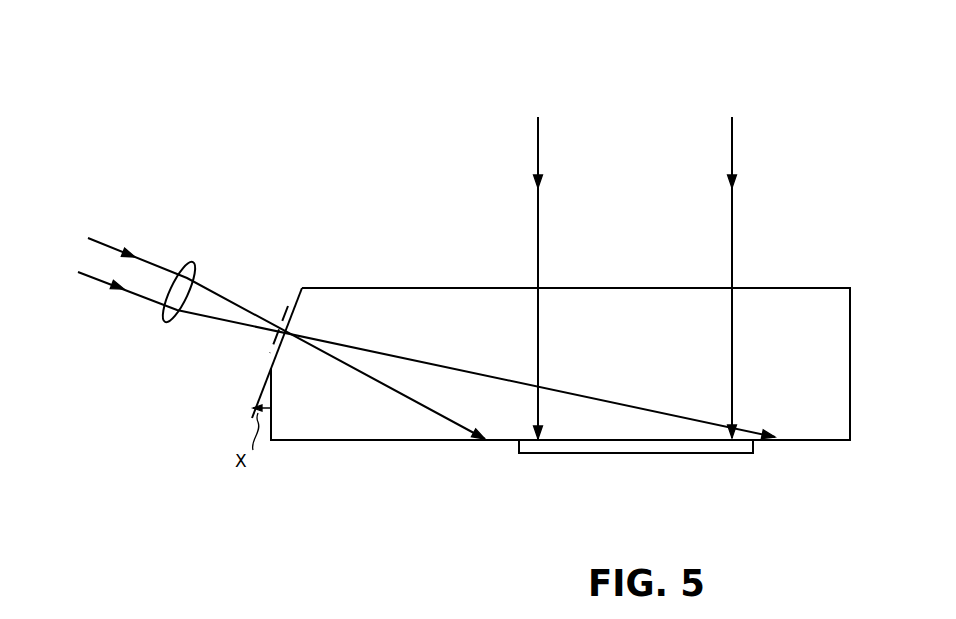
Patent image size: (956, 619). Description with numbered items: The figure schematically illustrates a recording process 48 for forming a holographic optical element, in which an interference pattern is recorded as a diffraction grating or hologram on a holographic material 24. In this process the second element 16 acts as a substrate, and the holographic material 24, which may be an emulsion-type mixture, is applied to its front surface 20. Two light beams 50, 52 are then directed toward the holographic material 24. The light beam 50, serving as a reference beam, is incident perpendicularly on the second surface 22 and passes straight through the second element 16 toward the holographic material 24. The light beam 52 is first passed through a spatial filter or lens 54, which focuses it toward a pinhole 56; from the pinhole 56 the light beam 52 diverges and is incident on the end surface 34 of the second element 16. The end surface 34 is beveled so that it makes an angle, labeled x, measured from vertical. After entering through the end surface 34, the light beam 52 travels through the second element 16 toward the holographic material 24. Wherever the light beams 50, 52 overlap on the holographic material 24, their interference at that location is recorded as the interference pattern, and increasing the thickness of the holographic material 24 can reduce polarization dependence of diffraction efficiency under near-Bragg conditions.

The recording process 48 is at (280, 68).
The second element 16 is at (790, 298).
The second surface 22 is at (448, 287).
The front surface 20 is at (390, 443).
The holographic material 24 is at (553, 447).
The end surface 34 is at (300, 287).
The pinhole 56 is at (270, 342).
The spatial filter or lens 54 is at (197, 262).
The light beam 52 is at (421, 338).
The light beam 50 is at (635, 278).